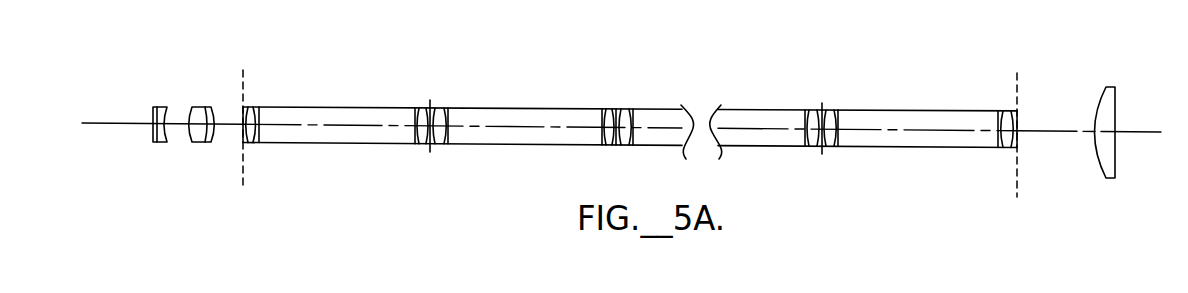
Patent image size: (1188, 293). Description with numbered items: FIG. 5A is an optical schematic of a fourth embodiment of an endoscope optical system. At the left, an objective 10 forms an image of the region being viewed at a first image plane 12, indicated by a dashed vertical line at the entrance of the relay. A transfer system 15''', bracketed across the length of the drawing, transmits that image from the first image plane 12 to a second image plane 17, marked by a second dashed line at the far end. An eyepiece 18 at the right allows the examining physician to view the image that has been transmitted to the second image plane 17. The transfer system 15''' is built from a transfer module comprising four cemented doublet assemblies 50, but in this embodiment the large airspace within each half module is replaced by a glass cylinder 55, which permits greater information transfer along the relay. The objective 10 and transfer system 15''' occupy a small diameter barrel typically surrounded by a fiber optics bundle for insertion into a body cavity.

The objective 10 is at (153, 61).
The first image plane 12 is at (243, 174).
The transfer system 15''' is at (630, 41).
The second image plane 17 is at (1018, 180).
The eyepiece 18 is at (1112, 86).
The cemented doublet assemblies 50 is at (252, 107).
The glass cylinder 55 is at (343, 110).